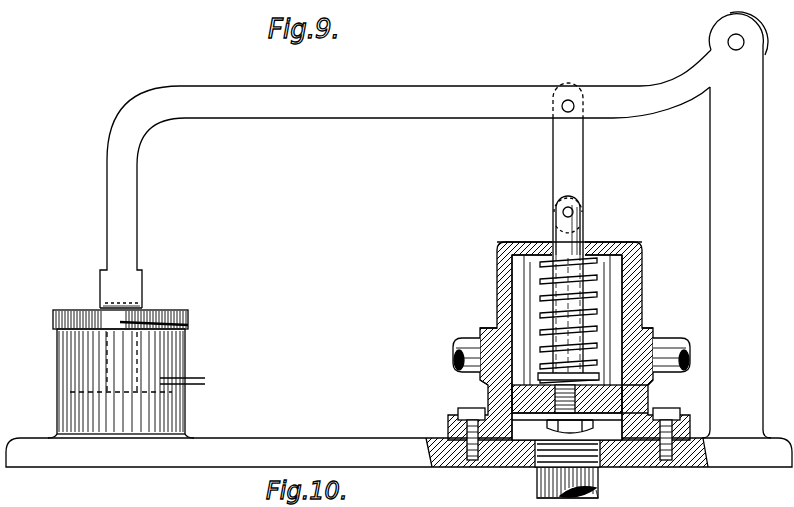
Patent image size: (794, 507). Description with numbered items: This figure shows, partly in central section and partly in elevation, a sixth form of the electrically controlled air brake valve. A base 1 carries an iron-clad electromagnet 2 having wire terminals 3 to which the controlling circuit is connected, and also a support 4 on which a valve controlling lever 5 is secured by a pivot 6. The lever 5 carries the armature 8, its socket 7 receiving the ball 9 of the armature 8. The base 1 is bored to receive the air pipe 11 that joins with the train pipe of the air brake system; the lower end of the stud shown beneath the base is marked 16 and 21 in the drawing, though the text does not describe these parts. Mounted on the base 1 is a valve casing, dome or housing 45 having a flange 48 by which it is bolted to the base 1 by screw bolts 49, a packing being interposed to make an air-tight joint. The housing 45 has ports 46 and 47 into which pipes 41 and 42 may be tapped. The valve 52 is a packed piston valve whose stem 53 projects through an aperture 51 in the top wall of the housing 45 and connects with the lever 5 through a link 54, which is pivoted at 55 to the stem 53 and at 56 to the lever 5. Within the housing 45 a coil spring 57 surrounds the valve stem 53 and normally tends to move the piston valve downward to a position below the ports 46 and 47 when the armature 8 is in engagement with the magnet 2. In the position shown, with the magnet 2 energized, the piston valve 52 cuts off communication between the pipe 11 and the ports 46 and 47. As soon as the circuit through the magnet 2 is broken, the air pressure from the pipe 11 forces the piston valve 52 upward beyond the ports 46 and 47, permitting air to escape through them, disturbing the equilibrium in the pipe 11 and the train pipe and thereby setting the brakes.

The base 1 is at (399, 452).
The electromagnet 2 is at (121, 383).
The wire terminals 3 is at (184, 370).
The support 4 is at (736, 225).
The valve controlling lever 5 is at (405, 179).
The pivot 6 is at (764, 58).
The socket 7 is at (125, 295).
The armature 8 is at (120, 309).
The ball 9 is at (112, 302).
The air pipe 11 is at (545, 488).
The threaded stud 16 is at (513, 470).
The stud end 21 is at (611, 498).
The pipe 41 is at (683, 352).
The pipe 42 is at (454, 350).
The valve housing 45 is at (643, 272).
The port 46 is at (655, 338).
The port 47 is at (480, 333).
The flange 48 is at (460, 419).
The screw bolts 49 is at (470, 408).
The aperture 51 is at (590, 245).
The piston valve 52 is at (650, 390).
The valve stem 53 is at (556, 230).
The link 54 is at (553, 166).
The pivot 55 is at (562, 211).
The pivot 56 is at (562, 106).
The coil spring 57 is at (540, 311).